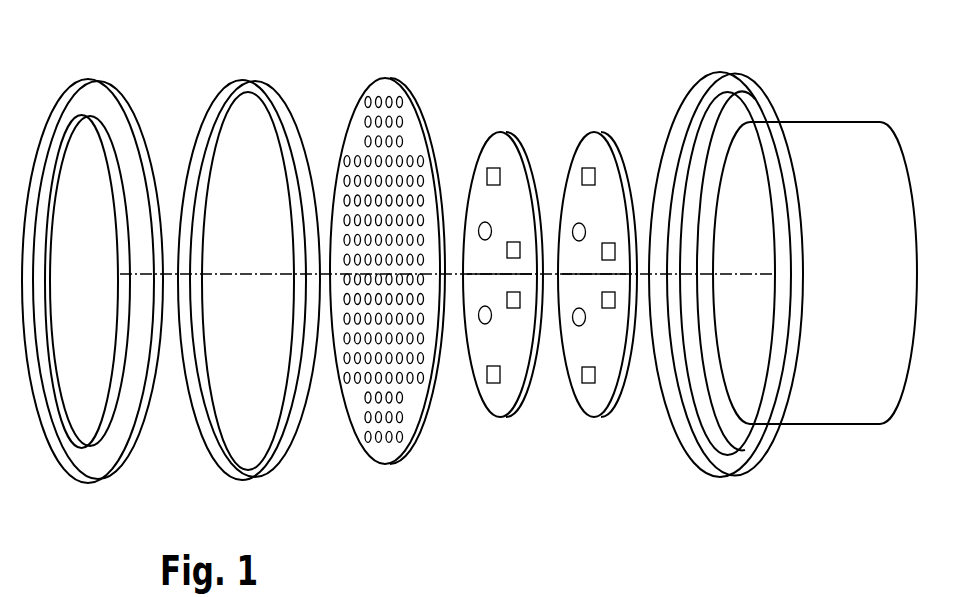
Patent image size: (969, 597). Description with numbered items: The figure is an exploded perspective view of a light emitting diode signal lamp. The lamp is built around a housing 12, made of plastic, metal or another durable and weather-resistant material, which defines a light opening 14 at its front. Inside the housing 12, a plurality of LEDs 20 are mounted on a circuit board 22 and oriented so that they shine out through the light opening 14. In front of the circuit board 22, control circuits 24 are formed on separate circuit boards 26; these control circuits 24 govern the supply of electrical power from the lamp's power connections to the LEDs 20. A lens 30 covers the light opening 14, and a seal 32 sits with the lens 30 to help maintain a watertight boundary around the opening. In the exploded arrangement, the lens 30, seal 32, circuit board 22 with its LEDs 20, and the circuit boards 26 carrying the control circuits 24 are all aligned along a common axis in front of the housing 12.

The housing 12 is at (815, 299).
The light opening 14 is at (783, 251).
The LEDs 20 is at (411, 280).
The circuit board 22 is at (404, 271).
The control circuits 24 is at (568, 290).
The circuit boards 26 is at (554, 275).
The lens 30 is at (100, 268).
The seal 32 is at (258, 292).